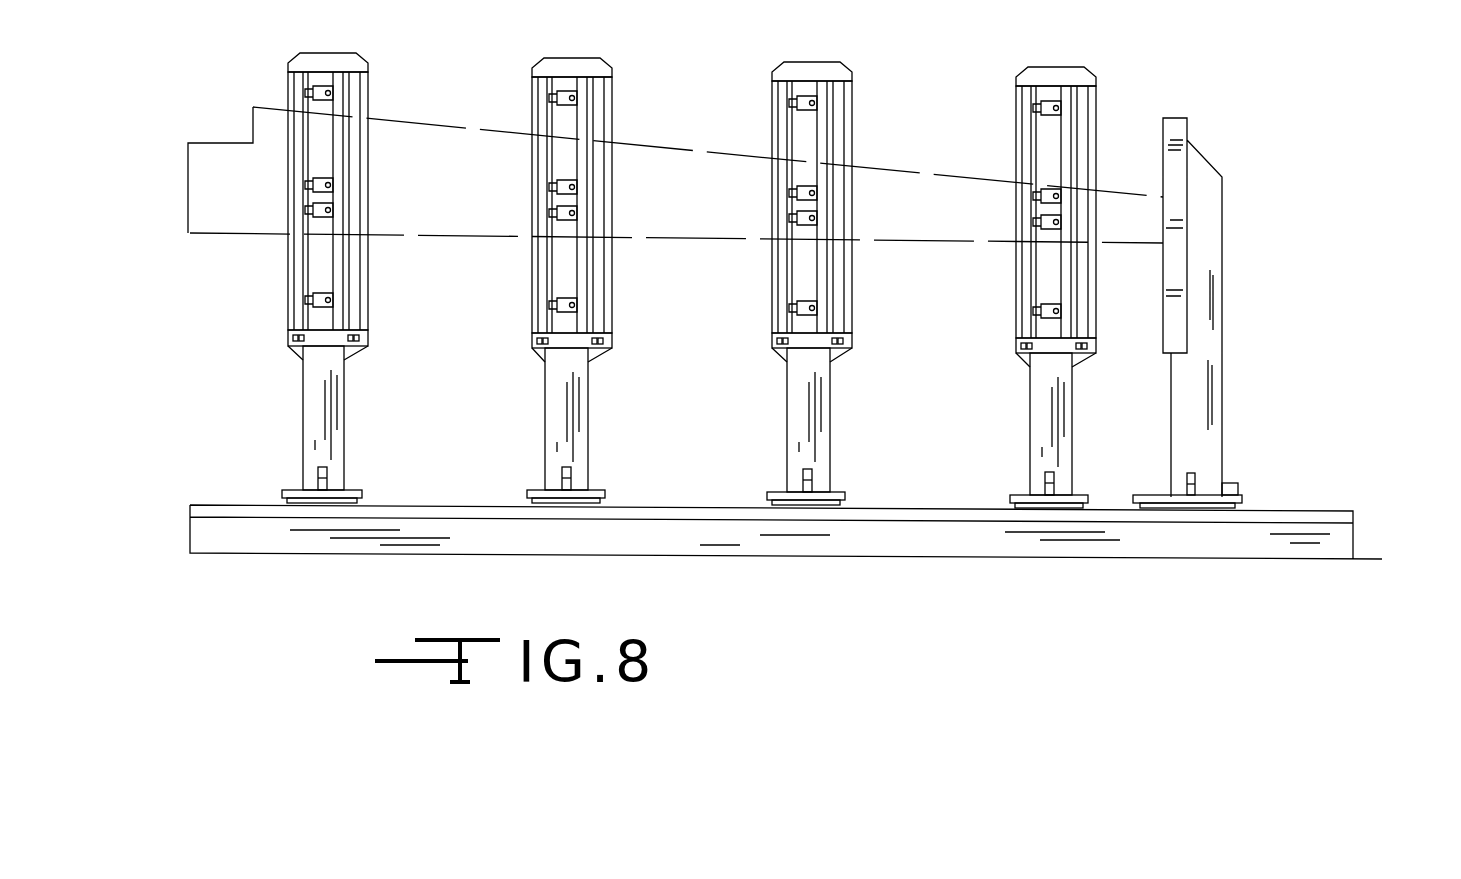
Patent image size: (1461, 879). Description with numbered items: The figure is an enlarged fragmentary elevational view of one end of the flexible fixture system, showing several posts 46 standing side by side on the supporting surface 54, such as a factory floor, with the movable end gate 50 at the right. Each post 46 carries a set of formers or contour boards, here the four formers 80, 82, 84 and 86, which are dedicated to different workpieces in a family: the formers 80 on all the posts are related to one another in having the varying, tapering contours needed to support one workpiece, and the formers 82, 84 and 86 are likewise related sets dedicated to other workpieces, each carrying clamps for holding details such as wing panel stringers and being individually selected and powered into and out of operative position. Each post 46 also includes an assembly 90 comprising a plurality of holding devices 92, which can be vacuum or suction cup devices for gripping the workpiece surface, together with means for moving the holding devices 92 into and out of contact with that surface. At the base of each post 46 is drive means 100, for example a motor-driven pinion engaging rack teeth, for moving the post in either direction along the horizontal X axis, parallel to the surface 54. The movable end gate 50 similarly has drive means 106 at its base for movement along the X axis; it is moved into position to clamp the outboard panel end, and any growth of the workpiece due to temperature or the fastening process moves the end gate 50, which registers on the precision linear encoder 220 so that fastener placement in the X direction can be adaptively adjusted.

The post 46 is at (303, 414).
The movable end gate 50 is at (1225, 176).
The supporting surface 54 is at (1365, 553).
The former 80 is at (290, 262).
The former 82 is at (300, 268).
The former 84 is at (358, 255).
The former 86 is at (368, 292).
The assembly 90 is at (540, 157).
The holding device 92 is at (310, 93).
The drive means 100 is at (327, 482).
The drive means 106 is at (1195, 486).
The precision linear encoder 220 is at (1240, 485).